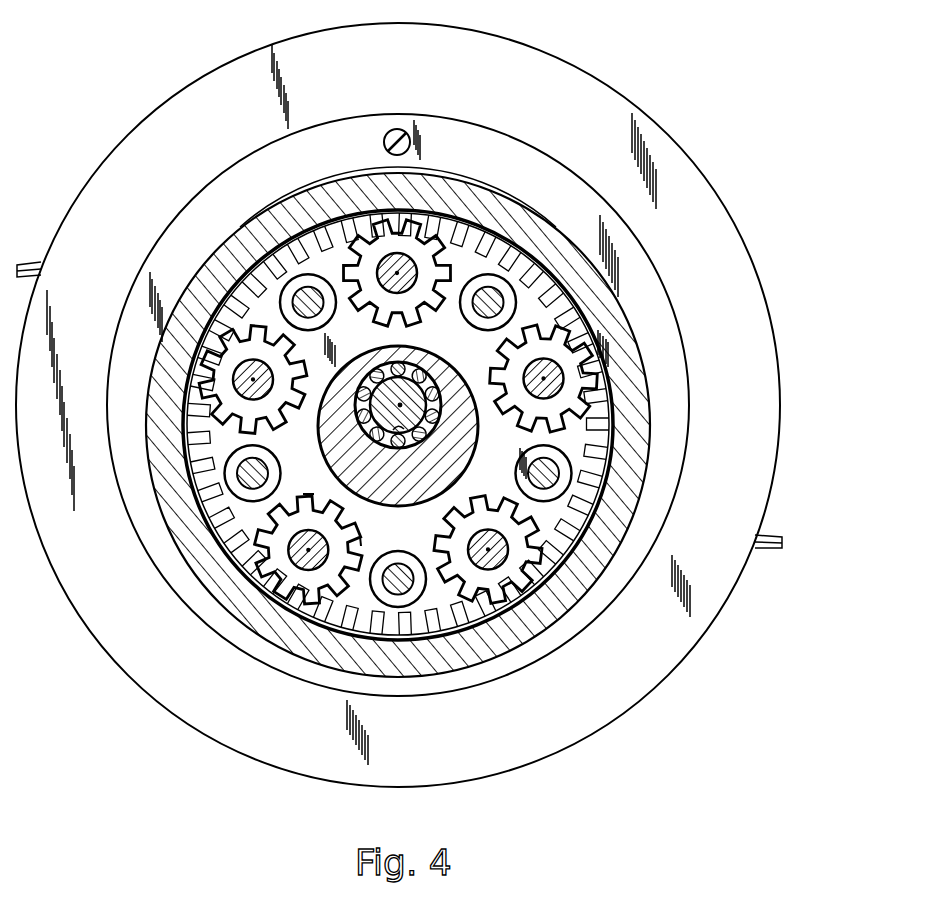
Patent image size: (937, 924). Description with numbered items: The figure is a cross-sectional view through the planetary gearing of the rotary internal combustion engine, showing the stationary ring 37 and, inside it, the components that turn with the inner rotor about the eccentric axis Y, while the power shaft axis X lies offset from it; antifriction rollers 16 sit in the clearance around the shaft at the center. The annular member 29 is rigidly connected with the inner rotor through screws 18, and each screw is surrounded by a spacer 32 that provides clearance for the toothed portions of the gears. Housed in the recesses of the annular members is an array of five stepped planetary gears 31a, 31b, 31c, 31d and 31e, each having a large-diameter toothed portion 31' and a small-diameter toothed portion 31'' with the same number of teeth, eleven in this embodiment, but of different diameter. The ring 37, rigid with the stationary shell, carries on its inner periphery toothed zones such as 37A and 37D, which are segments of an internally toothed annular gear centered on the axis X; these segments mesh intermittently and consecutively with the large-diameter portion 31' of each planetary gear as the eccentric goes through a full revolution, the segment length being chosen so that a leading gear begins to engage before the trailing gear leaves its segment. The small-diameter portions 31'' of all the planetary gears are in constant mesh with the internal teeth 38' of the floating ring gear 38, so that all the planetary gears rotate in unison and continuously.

The rollers 16 is at (368, 365).
The screws 18 is at (236, 465).
The annular member 29 is at (573, 450).
The planetary gear 31a is at (437, 236).
The planetary gear 31b is at (594, 373).
The planetary gear 31c is at (548, 580).
The planetary gear 31d is at (280, 580).
The planetary gear 31e is at (228, 345).
The large-diameter toothed portion 31' is at (305, 467).
The small-diameter toothed portion 31'' is at (395, 533).
The spacers 32 is at (233, 488).
The ring 37 is at (363, 124).
The toothed zone 37A is at (538, 220).
The toothed zone 37D is at (250, 222).
The floating ring gear 38 is at (398, 405).
The internal teeth 38' is at (398, 484).
The axis X is at (400, 405).
The axis Y is at (402, 428).